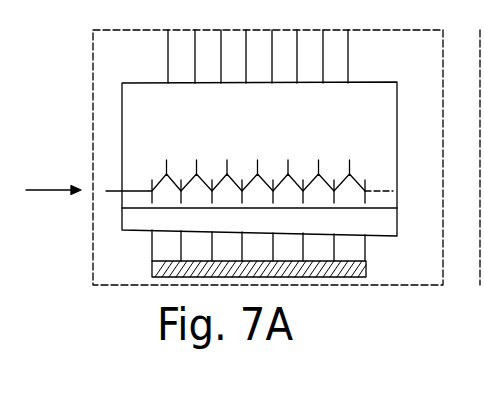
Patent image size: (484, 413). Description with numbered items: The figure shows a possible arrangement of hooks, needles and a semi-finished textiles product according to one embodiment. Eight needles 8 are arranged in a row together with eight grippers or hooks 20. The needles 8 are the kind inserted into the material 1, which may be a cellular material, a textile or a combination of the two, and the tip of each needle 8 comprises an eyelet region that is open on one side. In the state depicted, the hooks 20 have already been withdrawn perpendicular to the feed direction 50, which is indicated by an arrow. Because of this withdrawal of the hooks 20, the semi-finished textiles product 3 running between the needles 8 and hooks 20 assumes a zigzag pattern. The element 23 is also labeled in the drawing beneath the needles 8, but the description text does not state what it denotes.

The material 1 is at (390, 226).
The semi-finished textiles product 3 is at (350, 173).
The needle 8 is at (152, 248).
The hook 20 is at (166, 161).
The substrate plate 23 is at (349, 277).
The feed direction 50 is at (52, 193).